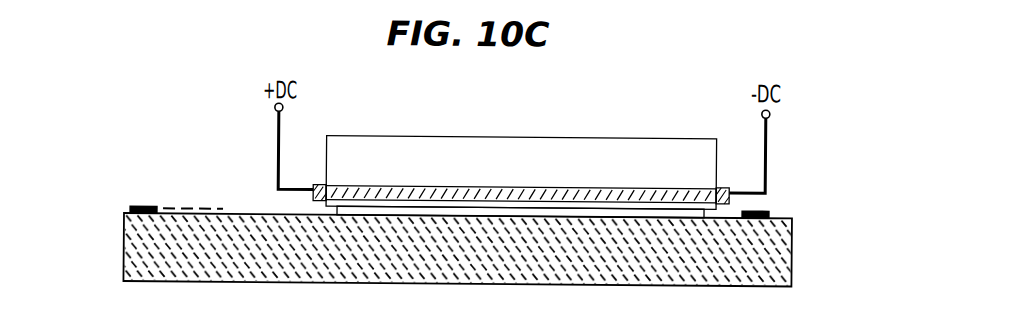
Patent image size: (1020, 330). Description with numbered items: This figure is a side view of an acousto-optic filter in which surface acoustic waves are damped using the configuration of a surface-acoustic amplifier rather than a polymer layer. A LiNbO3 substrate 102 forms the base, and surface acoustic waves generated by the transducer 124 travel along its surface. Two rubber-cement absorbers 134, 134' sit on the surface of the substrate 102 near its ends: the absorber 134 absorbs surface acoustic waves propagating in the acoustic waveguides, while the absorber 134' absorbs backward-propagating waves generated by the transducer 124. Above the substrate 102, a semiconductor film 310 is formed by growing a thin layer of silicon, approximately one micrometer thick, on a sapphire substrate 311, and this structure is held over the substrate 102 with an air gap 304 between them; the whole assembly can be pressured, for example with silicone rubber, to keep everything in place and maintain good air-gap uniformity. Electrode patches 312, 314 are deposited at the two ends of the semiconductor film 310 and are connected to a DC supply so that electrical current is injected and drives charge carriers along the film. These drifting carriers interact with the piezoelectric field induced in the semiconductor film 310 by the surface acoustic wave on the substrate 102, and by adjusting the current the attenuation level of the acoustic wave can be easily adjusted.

The substrate 102 is at (140, 255).
The transducer 124 is at (190, 207).
The absorber 134 is at (793, 197).
The absorber 134' is at (117, 176).
The air gap 304 is at (303, 208).
The semiconductor film 310 is at (570, 194).
The sapphire substrate 311 is at (470, 154).
The electrode patch 312 is at (320, 183).
The electrode patch 314 is at (722, 183).